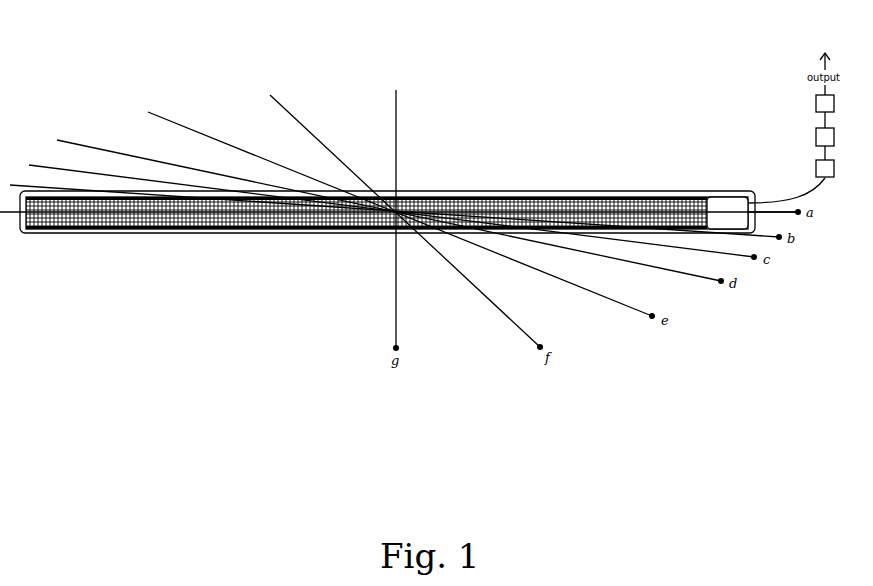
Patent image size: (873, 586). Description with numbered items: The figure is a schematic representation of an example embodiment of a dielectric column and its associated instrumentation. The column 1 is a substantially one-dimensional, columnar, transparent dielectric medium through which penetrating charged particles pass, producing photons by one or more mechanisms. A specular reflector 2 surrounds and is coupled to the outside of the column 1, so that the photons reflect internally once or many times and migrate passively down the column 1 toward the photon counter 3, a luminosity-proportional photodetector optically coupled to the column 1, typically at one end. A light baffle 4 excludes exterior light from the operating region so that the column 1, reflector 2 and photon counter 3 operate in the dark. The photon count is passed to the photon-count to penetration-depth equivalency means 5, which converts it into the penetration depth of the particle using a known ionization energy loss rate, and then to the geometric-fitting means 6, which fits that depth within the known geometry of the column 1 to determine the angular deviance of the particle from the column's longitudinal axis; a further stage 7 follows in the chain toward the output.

The column 1 is at (465, 205).
The reflector 2 is at (597, 196).
The photon counter 3 is at (727, 196).
The light baffle 4 is at (754, 193).
The photon-count to penetration-depth equivalency means 5 is at (825, 168).
The geometric-fitting means 6 is at (825, 137).
The processing unit 7 is at (825, 103).